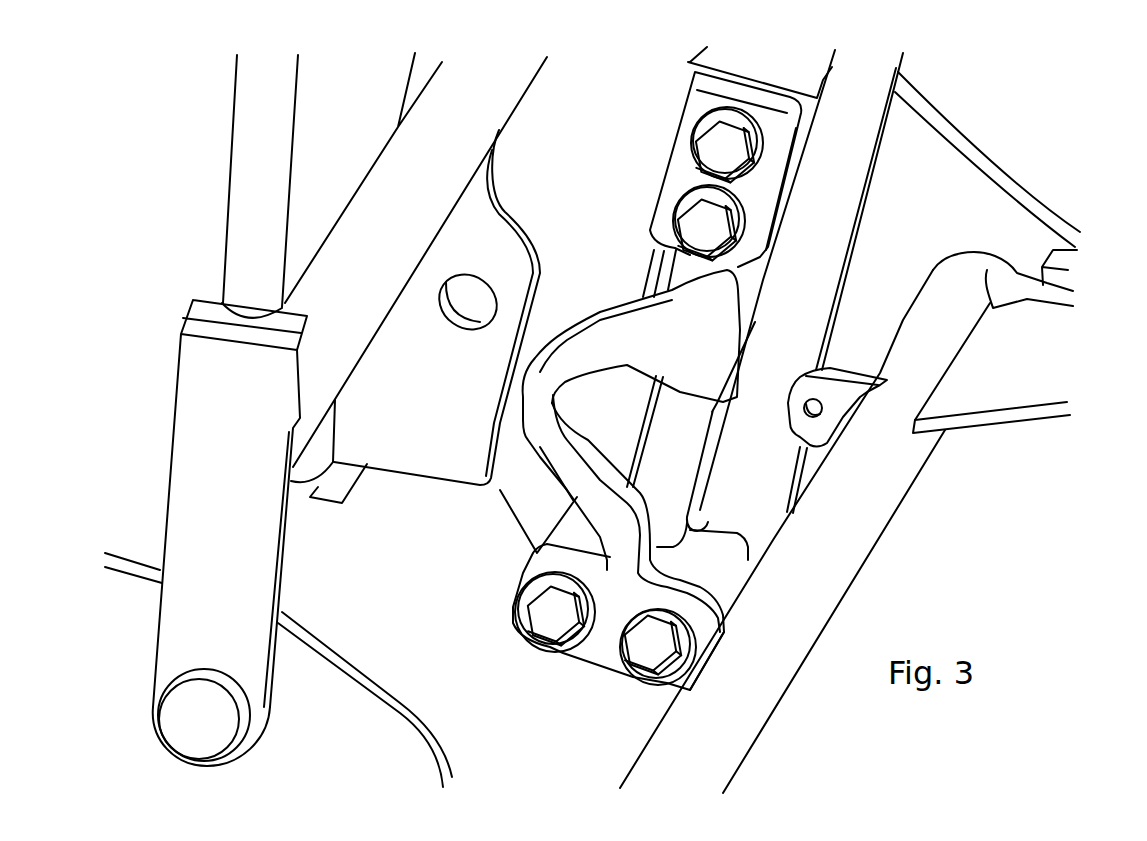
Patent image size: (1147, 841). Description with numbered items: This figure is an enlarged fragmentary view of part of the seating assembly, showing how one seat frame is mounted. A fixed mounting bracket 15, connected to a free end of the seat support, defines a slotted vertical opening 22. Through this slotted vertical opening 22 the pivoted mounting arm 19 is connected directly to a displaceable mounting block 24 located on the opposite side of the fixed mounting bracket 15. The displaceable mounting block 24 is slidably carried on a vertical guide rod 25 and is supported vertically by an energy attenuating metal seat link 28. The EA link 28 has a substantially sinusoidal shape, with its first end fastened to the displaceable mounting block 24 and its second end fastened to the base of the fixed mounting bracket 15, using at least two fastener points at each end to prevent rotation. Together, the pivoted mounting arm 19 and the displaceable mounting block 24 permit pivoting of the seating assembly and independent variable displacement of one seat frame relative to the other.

The fixed mounting bracket 15 is at (838, 187).
The pivoted mounting arm 19 is at (968, 207).
The slotted vertical opening 22 is at (720, 430).
The displaceable mounting block 24 is at (736, 58).
The vertical guide rod 25 is at (655, 438).
The energy attenuating (EA) metal seat link 28 is at (613, 330).